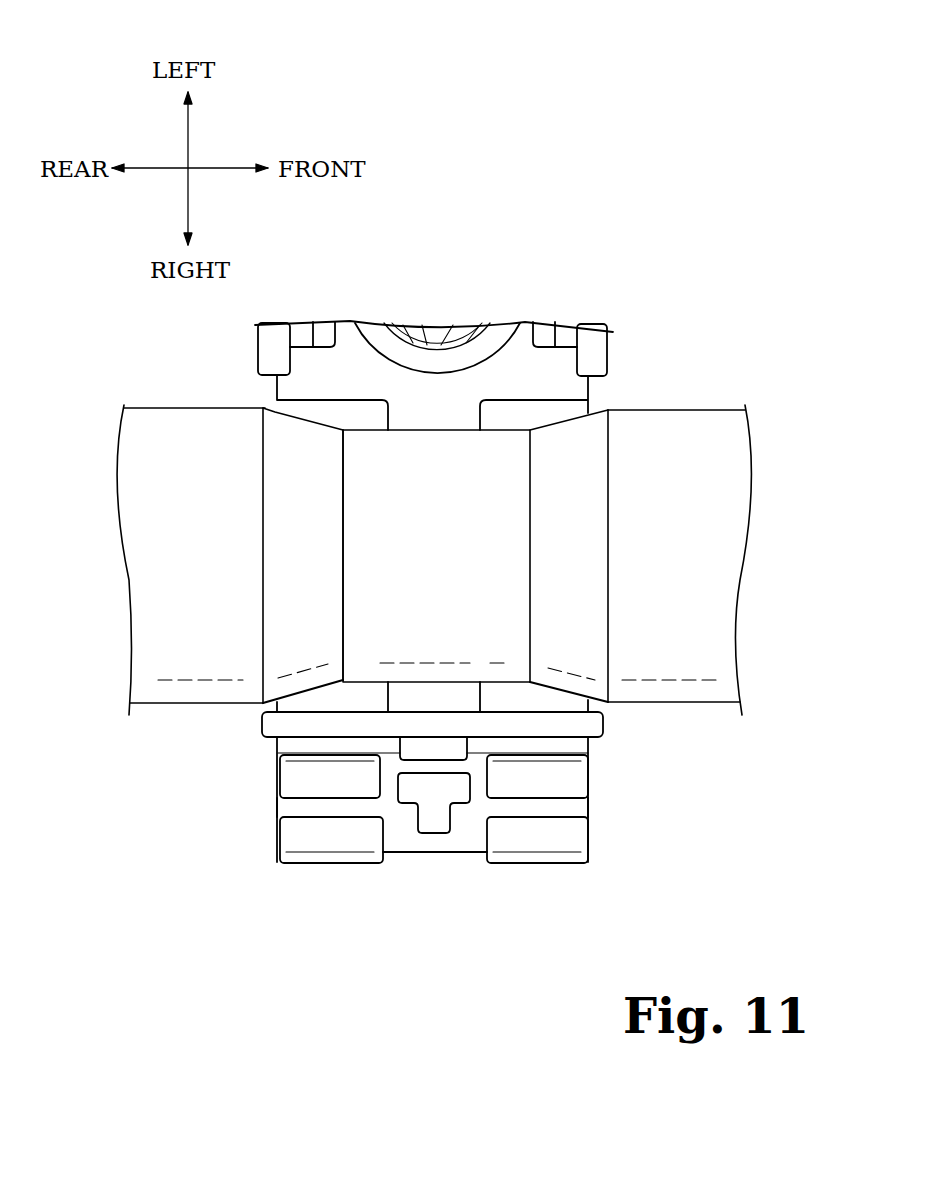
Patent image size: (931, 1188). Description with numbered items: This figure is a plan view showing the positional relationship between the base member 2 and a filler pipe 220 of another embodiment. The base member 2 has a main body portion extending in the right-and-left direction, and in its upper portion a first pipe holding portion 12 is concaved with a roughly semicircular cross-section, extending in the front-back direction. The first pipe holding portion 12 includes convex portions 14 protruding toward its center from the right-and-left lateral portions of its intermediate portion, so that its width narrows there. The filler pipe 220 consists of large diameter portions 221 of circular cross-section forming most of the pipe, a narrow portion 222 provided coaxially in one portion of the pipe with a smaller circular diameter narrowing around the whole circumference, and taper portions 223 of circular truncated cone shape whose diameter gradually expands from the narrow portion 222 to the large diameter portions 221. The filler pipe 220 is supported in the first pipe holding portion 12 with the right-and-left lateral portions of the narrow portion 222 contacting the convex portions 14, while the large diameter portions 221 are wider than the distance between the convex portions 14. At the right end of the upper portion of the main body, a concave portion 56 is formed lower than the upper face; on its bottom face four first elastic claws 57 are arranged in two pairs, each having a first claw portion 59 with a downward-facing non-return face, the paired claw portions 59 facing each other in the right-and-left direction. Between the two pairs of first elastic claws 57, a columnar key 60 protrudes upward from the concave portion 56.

The base member 2 is at (434, 832).
The first pipe holding portion 12 is at (582, 407).
The convex portions 14 is at (444, 420).
The concave portion 56 is at (470, 849).
The first elastic claws 57 is at (277, 773).
The first claw portion 59 is at (283, 827).
The columnar key 60 is at (430, 833).
The filler pipe 220 is at (438, 560).
The large diameter portions 221 is at (159, 692).
The narrow portion 222 is at (353, 517).
The taper portions 223 is at (277, 630).